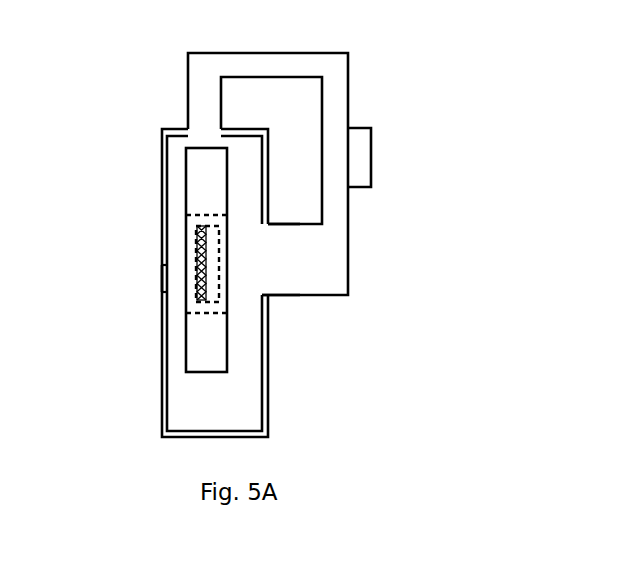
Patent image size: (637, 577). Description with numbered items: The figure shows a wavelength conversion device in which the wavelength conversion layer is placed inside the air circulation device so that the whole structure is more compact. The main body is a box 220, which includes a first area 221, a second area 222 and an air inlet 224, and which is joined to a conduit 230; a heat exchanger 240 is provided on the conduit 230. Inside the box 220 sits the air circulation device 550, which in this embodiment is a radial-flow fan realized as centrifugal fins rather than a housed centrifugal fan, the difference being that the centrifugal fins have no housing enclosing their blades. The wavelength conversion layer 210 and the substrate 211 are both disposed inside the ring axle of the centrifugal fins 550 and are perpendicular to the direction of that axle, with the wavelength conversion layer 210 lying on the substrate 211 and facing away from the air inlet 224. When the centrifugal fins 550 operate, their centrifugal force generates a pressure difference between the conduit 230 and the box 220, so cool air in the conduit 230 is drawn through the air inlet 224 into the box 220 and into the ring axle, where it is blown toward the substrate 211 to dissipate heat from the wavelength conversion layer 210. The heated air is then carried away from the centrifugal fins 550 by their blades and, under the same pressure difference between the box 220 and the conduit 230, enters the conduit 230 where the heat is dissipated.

The wavelength conversion layer 210 is at (184, 304).
The substrate 211 is at (228, 310).
The box 220 is at (268, 393).
The first area 221 is at (113, 268).
The second area 222 is at (162, 263).
The air inlet 224 is at (262, 273).
The conduit 230 is at (347, 255).
The heat exchanger 240 is at (365, 163).
The air circulation device (centrifugal fins) 550 is at (198, 174).